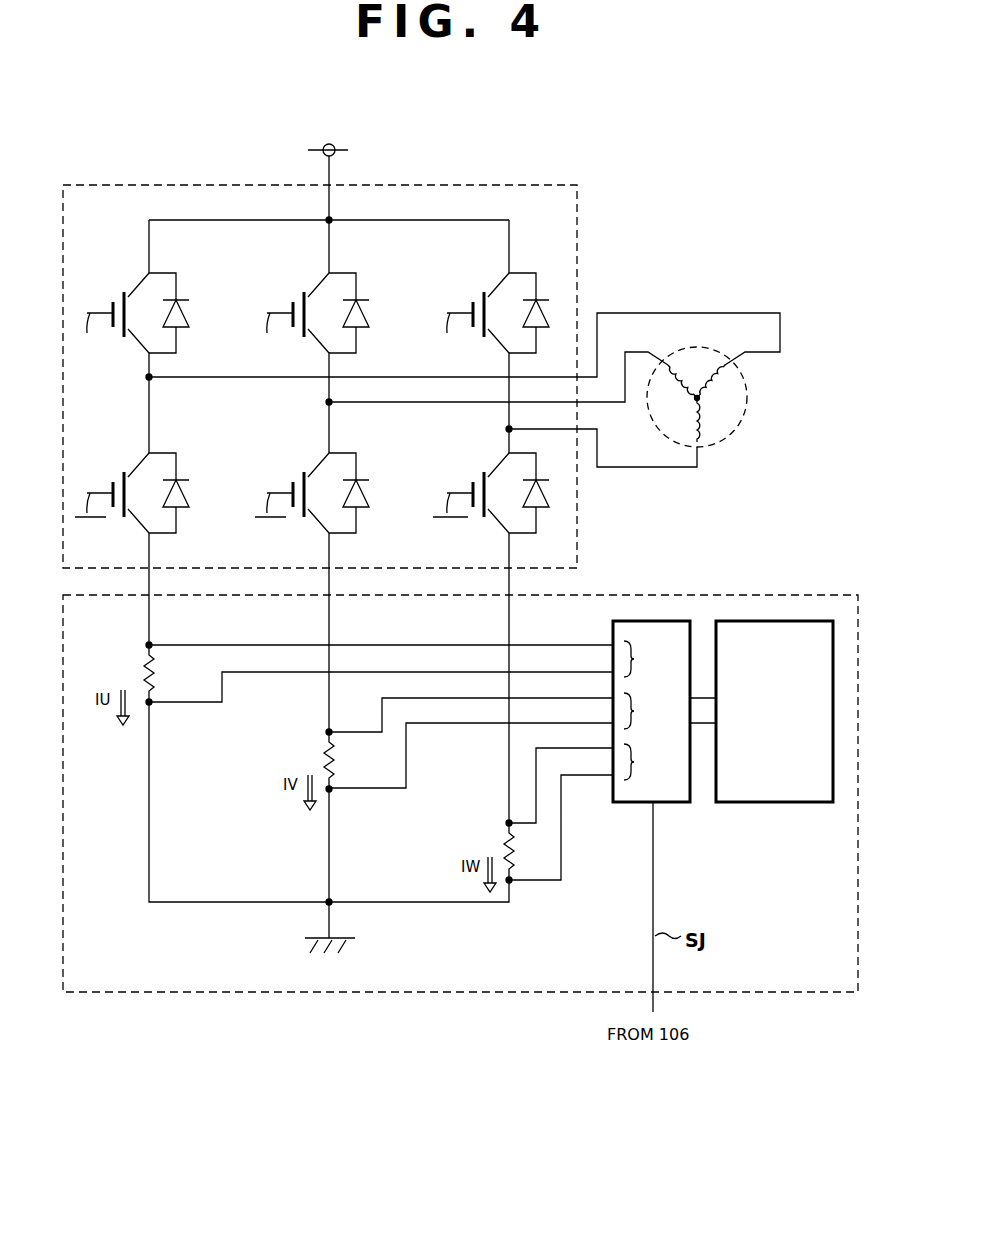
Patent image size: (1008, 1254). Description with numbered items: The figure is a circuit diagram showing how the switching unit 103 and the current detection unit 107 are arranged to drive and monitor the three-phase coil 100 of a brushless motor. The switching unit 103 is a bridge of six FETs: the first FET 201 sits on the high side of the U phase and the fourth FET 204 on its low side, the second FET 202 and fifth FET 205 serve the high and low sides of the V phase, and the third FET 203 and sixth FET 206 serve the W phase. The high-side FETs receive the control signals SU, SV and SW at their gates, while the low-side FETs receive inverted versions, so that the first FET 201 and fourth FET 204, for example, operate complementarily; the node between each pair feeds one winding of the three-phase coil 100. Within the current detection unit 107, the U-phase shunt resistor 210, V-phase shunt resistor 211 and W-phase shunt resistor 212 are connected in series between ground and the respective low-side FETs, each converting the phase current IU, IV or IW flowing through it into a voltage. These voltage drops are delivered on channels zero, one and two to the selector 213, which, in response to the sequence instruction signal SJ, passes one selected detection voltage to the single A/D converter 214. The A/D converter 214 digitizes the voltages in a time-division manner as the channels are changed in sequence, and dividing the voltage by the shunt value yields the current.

The three-phase coil 100 is at (751, 420).
The switching unit 103 is at (542, 185).
The current detection unit 107 is at (820, 594).
The first FET 201 is at (137, 284).
The second FET 202 is at (317, 284).
The third FET 203 is at (497, 284).
The fourth FET 204 is at (137, 464).
The fifth FET 205 is at (317, 464).
The sixth FET 206 is at (497, 464).
The U-phase shunt resistor 210 is at (140, 660).
The V-phase shunt resistor 211 is at (320, 749).
The W-phase shunt resistor 212 is at (500, 838).
The selector 213 is at (682, 805).
The A/D converter 214 is at (810, 805).